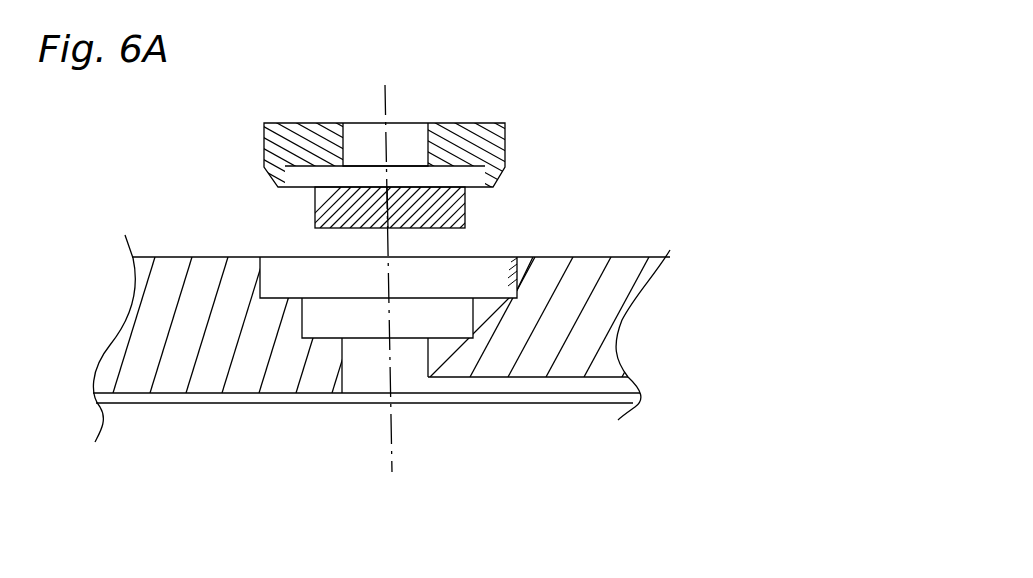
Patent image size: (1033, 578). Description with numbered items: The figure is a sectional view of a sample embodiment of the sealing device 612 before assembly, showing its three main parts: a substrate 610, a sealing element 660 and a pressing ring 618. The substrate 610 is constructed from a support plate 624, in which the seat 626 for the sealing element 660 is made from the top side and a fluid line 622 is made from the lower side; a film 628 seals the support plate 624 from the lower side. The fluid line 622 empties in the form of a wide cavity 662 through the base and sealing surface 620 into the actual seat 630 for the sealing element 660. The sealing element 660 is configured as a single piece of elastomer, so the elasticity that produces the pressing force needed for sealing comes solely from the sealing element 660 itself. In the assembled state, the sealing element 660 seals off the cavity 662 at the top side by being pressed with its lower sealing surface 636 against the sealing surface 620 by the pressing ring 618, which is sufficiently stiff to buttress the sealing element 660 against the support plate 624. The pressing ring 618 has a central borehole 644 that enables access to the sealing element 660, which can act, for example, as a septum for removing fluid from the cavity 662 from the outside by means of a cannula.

The sealing device 612 is at (712, 62).
The pressing ring 618 is at (505, 142).
The central borehole 644 is at (428, 140).
The sealing element 660 is at (467, 216).
The substrate 610 is at (712, 248).
The support plate 624 is at (617, 312).
The lower sealing surface 636 is at (402, 229).
The seat 626 is at (305, 268).
The base and sealing surface 620 is at (323, 337).
The actual seat 630 is at (447, 317).
The cavity 662 is at (365, 370).
The fluid line 622 is at (405, 380).
The film 628 is at (617, 398).